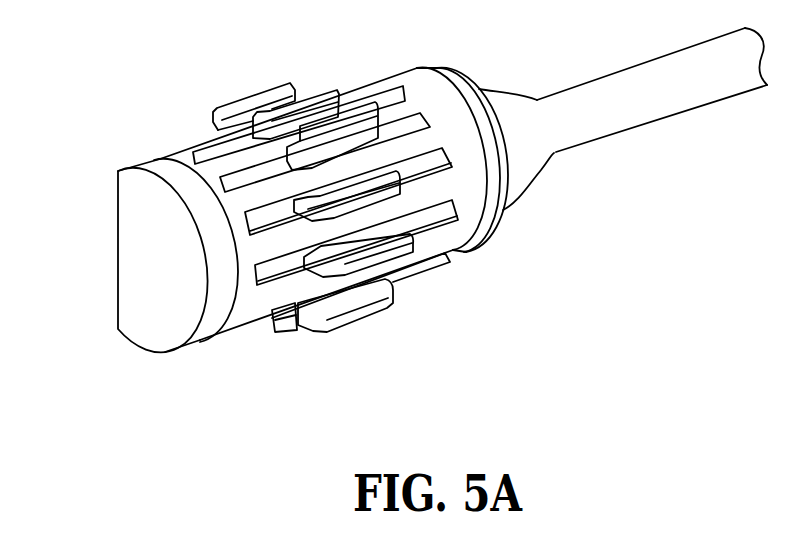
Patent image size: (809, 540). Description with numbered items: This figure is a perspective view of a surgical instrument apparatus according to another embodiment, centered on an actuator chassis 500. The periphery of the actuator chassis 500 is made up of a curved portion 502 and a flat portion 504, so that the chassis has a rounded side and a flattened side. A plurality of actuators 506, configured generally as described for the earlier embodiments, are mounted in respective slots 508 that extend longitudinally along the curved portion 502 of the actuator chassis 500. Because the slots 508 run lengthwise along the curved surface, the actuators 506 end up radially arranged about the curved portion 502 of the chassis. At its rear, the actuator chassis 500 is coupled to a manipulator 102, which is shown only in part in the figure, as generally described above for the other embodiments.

The actuator chassis 500 is at (297, 206).
The curved portion 502 is at (240, 308).
The flat portion 504 is at (117, 257).
The actuators 506 is at (352, 117).
The slots 508 is at (431, 163).
The manipulator 102 is at (677, 160).